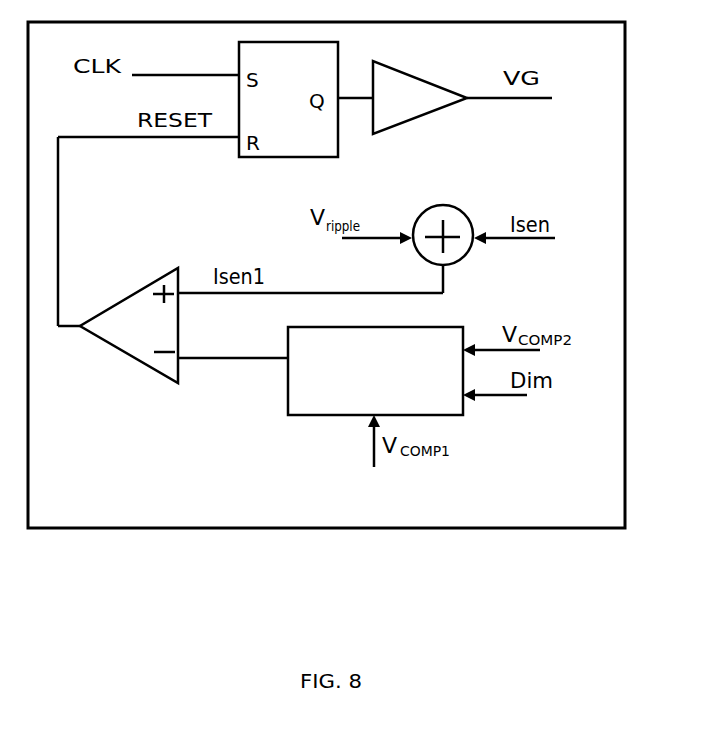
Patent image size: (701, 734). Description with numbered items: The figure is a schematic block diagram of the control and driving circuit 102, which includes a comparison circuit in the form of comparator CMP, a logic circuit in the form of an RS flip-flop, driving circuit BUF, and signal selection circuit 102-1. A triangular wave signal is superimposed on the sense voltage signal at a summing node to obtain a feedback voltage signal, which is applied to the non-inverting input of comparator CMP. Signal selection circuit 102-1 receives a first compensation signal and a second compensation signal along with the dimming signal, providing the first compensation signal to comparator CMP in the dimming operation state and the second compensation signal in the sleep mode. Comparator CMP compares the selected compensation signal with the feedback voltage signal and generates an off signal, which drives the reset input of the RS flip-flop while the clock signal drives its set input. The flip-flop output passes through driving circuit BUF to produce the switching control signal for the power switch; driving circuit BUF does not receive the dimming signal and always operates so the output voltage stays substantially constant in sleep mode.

The control and driving circuit 102 is at (602, 513).
The signal selection circuit 102-1 is at (405, 410).
The comparator CMP is at (129, 325).
The driving circuit BUF is at (420, 97).